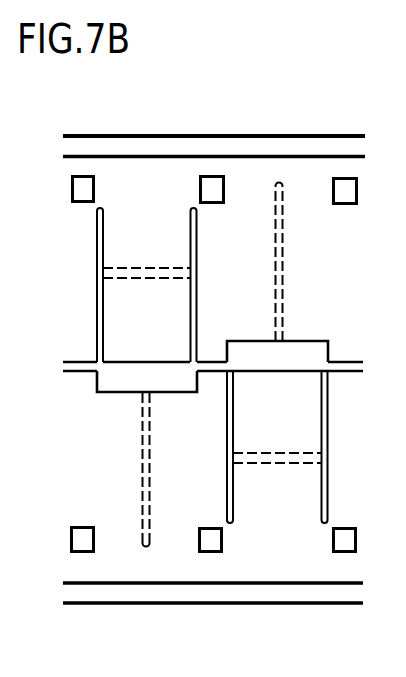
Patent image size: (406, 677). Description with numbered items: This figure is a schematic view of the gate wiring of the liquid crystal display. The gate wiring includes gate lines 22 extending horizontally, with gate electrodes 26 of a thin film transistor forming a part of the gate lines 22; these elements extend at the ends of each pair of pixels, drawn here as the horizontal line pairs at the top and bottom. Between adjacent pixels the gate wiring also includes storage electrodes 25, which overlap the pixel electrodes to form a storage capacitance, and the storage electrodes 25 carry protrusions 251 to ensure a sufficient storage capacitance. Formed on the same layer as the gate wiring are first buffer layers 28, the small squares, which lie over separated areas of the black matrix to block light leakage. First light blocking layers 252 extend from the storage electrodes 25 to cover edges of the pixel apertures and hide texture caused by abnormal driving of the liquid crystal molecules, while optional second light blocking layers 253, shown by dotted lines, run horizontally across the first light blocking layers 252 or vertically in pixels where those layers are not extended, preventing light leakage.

The gate line 22 is at (221, 148).
The storage electrode 25 is at (70, 359).
The gate electrode 26 is at (133, 145).
The first buffer layer 28 is at (342, 525).
The protrusion 251 is at (125, 385).
The first light blocking layer 252 is at (321, 425).
The second light blocking layer 253 is at (147, 272).